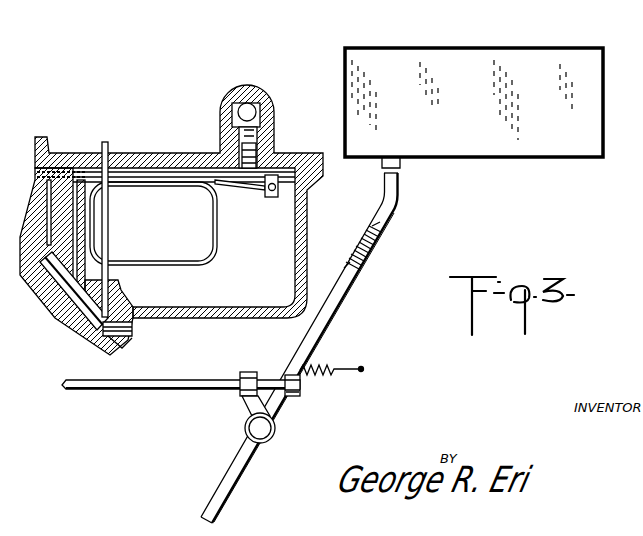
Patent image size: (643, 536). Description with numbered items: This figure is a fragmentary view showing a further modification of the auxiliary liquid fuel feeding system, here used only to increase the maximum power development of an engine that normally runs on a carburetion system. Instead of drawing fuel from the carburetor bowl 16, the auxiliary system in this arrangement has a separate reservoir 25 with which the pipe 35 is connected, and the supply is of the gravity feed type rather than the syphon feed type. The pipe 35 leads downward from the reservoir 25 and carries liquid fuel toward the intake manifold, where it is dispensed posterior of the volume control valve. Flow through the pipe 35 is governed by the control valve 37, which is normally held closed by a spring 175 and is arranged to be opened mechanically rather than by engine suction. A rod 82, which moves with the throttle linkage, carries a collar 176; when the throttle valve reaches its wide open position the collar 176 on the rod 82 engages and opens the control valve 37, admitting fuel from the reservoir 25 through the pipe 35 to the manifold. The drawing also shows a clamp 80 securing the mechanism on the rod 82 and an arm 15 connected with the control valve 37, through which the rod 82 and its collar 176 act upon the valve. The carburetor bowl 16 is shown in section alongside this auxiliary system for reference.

The arm 15 is at (248, 406).
The carburetor bowl 16 is at (305, 215).
The separate reservoir 25 is at (600, 125).
The pipe 35 is at (326, 312).
The control valve 37 is at (268, 433).
The clamp 80 is at (249, 372).
The rod 82 is at (165, 389).
The spring 175 is at (337, 370).
The collar 176 is at (296, 396).